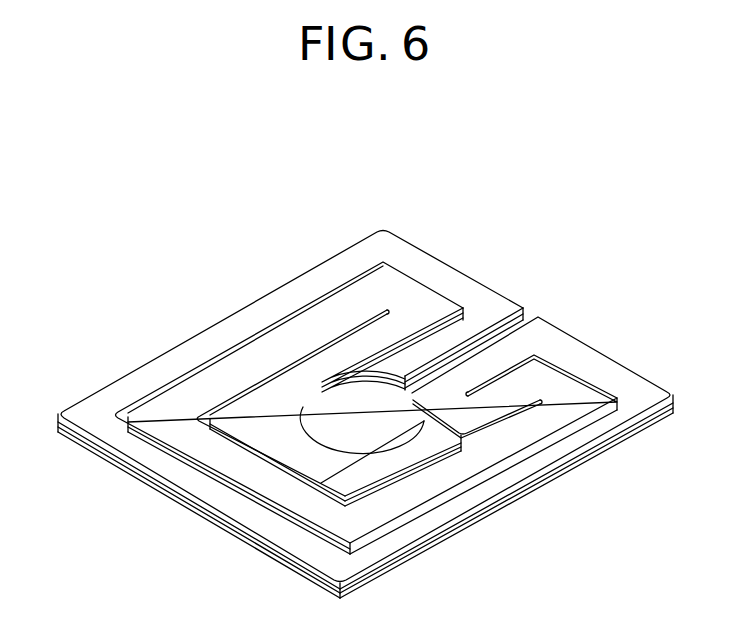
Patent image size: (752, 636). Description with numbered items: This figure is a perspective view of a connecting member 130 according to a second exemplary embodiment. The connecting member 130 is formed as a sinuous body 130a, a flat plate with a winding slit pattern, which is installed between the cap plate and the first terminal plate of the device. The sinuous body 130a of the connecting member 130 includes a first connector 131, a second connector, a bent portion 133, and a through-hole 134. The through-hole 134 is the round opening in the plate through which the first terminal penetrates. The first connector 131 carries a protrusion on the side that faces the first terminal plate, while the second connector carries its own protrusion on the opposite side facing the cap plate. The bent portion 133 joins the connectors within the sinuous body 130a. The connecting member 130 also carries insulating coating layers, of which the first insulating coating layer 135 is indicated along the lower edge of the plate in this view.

The connecting member 130 is at (422, 158).
The sinuous body 130a is at (365, 380).
The first connector 131 is at (380, 470).
The bent portion 133 is at (656, 428).
The through-hole 134 is at (371, 411).
The first insulating coating layer 135 is at (270, 528).